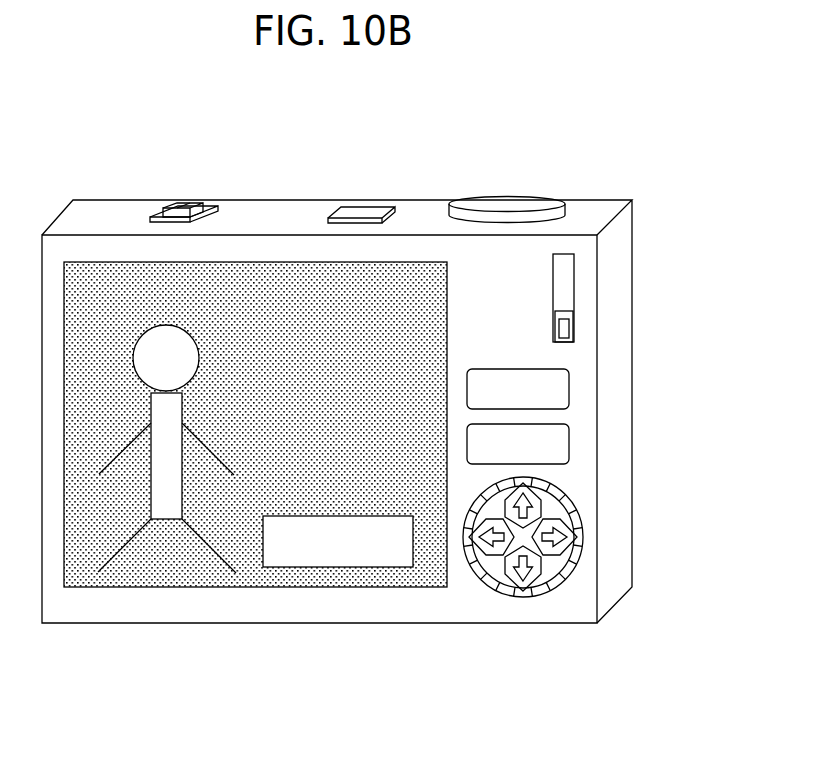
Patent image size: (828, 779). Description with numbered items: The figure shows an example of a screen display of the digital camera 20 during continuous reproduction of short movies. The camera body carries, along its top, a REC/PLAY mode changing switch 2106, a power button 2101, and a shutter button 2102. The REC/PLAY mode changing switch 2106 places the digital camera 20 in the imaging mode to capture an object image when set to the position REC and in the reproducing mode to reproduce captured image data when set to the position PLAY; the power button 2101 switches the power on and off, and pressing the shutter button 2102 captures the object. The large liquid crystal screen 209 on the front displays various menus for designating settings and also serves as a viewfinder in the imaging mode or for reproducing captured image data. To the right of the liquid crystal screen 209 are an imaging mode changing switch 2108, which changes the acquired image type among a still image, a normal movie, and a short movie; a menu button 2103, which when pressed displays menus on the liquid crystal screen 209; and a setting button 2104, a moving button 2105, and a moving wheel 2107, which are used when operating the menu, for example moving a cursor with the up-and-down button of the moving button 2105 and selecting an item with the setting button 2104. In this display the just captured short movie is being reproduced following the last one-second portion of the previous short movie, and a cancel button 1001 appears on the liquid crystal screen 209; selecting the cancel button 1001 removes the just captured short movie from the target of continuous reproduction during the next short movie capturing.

The digital camera 20 is at (88, 203).
The REC/PLAY mode changing switch 2106 is at (182, 202).
The power button 2101 is at (363, 210).
The shutter button 2102 is at (508, 202).
The imaging mode changing switch 2108 is at (568, 326).
The menu button 2103 is at (561, 389).
The setting button 2104 is at (558, 446).
The moving button 2105 is at (573, 537).
The moving wheel 2107 is at (565, 581).
The liquid crystal screen 209 is at (188, 575).
The cancel button 1001 is at (330, 567).